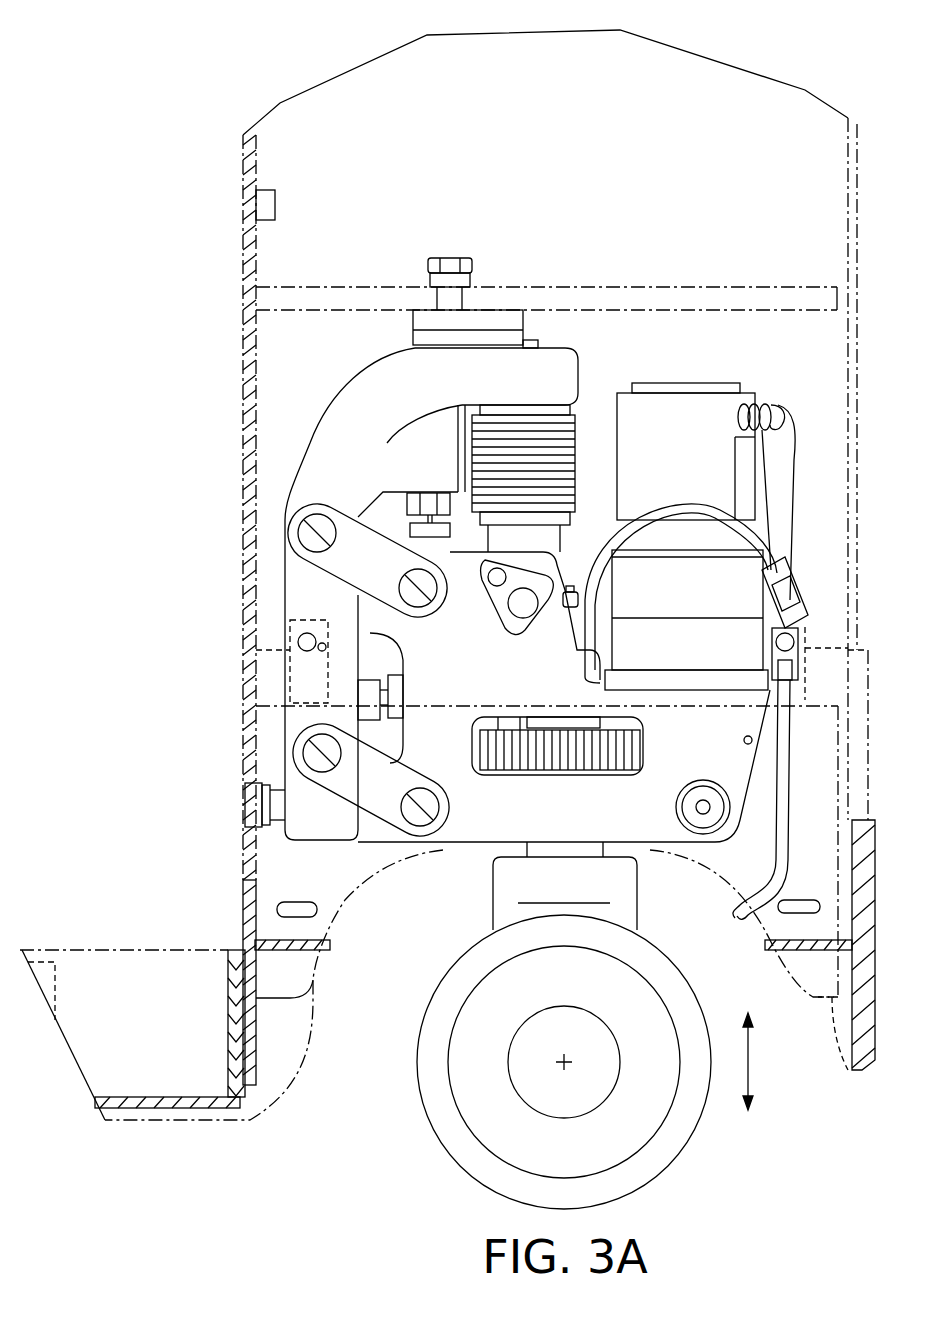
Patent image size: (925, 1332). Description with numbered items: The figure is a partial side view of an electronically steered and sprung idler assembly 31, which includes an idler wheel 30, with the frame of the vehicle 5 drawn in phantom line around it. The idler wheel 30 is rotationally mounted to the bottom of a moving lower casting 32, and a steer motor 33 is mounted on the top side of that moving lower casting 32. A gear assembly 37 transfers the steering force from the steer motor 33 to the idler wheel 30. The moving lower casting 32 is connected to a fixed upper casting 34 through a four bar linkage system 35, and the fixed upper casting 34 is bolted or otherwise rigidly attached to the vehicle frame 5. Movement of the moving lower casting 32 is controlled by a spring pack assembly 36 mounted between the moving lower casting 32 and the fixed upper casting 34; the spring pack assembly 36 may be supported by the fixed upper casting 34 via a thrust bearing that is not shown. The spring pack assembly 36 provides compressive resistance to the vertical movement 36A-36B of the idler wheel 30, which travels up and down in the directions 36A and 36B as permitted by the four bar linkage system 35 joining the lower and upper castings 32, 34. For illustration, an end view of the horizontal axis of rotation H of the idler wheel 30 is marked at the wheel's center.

The vehicle frame 5 is at (352, 68).
The electronically steered and sprung idler assembly 31 is at (210, 446).
The fixed upper casting 34 is at (335, 405).
The four bar linkage system 35 is at (348, 515).
The spring pack assembly 36 is at (577, 430).
The steer motor 33 is at (685, 410).
The gear assembly 37 is at (643, 742).
The moving lower casting 32 is at (478, 827).
The idler wheel 30 is at (430, 1127).
The horizontal axis of rotation H is at (562, 1065).
The vertical movement 36A is at (749, 1023).
The vertical movement 36B is at (747, 1106).